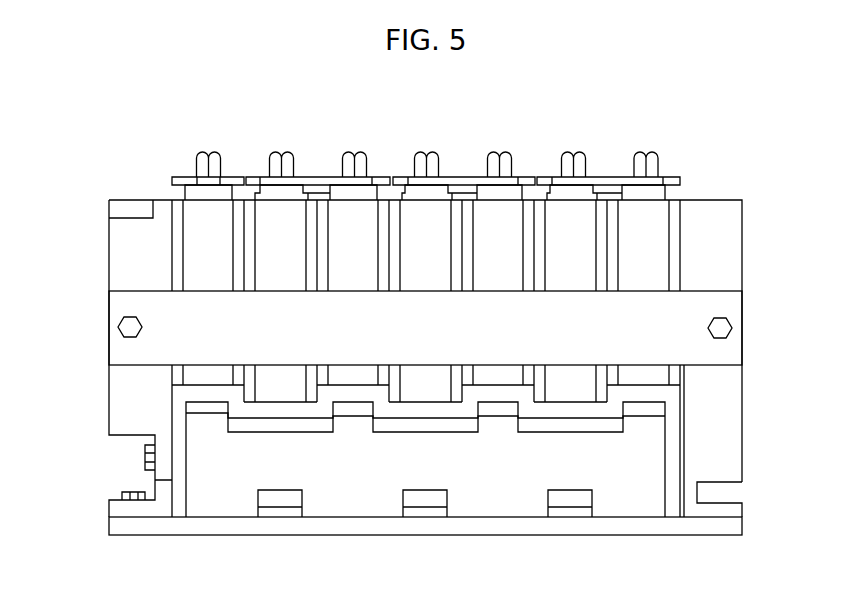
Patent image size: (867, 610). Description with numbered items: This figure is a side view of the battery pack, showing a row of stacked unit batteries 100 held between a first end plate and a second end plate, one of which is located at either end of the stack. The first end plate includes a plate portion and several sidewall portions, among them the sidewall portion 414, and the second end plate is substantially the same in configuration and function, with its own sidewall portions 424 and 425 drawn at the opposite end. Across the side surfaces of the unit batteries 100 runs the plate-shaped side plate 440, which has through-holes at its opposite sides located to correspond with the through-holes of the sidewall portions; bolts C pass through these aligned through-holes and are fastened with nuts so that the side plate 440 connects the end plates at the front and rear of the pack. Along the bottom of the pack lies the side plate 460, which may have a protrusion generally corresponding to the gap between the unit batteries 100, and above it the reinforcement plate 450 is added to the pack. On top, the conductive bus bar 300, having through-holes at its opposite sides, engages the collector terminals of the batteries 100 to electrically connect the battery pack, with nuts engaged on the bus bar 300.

The battery 100 is at (656, 138).
The bus bar 300 is at (603, 182).
The third sidewall portion 414 is at (123, 240).
The second end plate 424 is at (733, 240).
The end plate flange 425 is at (733, 510).
The side plate 440 is at (733, 305).
The reinforcement plate 450 is at (628, 503).
The side plate 460 is at (735, 528).
The bolt C is at (728, 333).